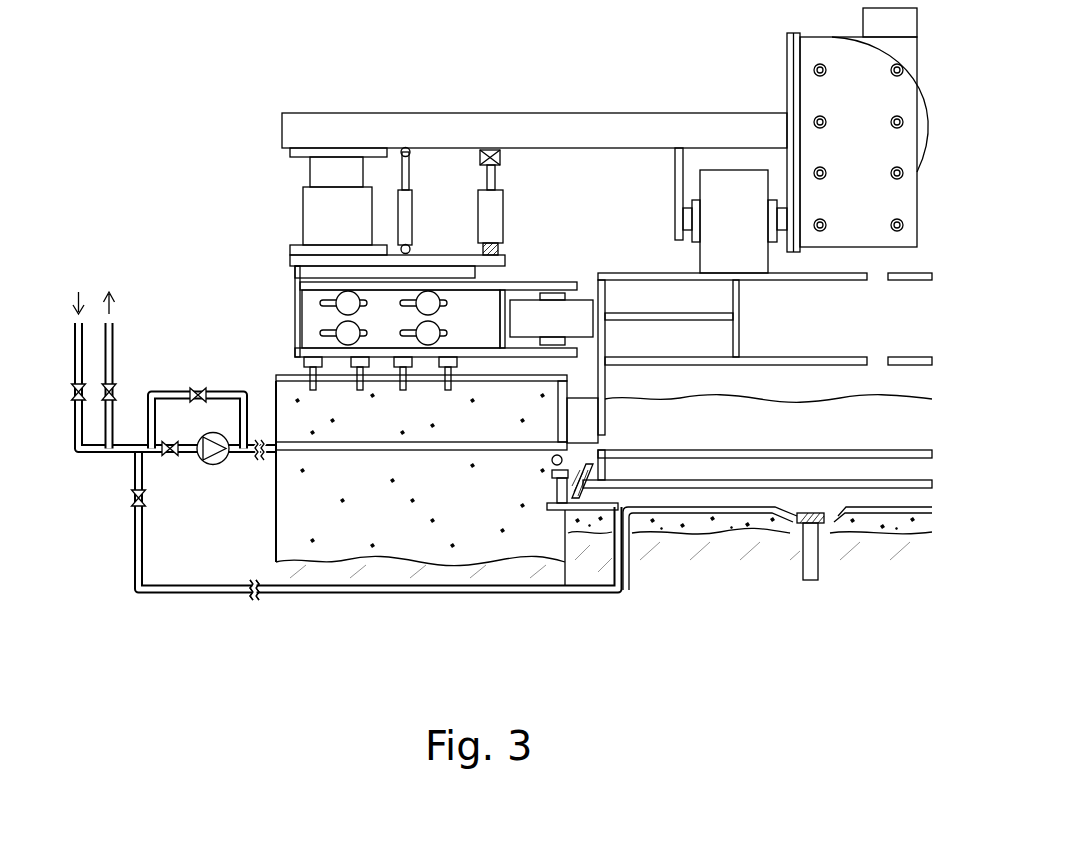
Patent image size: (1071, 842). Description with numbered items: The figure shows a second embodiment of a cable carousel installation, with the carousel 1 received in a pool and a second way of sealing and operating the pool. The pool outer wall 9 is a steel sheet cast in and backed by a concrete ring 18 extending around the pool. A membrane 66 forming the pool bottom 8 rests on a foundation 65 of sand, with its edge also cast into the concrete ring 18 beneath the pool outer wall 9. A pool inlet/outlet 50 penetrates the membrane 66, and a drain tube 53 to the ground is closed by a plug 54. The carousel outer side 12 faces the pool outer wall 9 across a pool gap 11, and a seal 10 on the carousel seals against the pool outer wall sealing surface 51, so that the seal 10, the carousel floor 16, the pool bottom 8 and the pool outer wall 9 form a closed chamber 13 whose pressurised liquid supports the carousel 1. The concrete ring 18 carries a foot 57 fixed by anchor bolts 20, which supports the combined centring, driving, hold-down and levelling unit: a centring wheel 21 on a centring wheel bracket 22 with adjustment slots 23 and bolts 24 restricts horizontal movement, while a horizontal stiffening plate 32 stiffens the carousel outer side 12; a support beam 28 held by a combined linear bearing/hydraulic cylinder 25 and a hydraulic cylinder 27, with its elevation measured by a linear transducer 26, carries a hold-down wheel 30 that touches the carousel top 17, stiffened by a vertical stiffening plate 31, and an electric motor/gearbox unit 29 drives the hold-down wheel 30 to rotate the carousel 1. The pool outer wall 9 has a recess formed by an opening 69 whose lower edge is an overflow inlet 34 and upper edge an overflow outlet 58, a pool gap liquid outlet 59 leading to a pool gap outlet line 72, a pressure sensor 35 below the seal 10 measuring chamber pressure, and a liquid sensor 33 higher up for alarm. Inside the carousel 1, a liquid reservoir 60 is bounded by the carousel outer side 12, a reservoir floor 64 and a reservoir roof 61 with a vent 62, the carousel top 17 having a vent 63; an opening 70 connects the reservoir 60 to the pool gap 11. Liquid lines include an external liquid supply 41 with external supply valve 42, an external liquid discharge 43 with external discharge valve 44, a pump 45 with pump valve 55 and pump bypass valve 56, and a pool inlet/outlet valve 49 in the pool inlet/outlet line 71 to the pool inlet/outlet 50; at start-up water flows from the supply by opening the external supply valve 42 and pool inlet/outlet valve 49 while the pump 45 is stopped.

The carousel 1 is at (628, 262).
The pool bottom 8 is at (910, 515).
The pool outer wall 9 is at (558, 430).
The seal 10 is at (586, 520).
The pool gap 11 is at (582, 390).
The carousel outer side 12 is at (605, 378).
The closed chamber 13 is at (728, 505).
The carousel floor 16 is at (675, 483).
The carousel top 17 is at (912, 282).
The concrete ring 18 is at (290, 522).
The anchor bolts 20 is at (306, 357).
The centring wheel 21 is at (575, 300).
The centring wheel bracket 22 is at (500, 290).
The adjustment slots 23 is at (405, 330).
The bolts 24 is at (437, 305).
The combined linear bearing/hydraulic cylinder 25 is at (315, 200).
The linear transducer 26 is at (406, 203).
The hydraulic cylinder 27 is at (497, 205).
The support beam 28 is at (455, 127).
The electric motor/gearbox unit 29 is at (810, 88).
The hold-down wheel 30 is at (712, 262).
The vertical stiffening plate 31 is at (733, 335).
The horizontal stiffening plate 32 is at (646, 321).
The liquid sensor 33 is at (565, 405).
The overflow inlet 34 is at (555, 485).
The pressure sensor 35 is at (558, 503).
The external liquid supply 41 is at (172, 358).
The external supply valve 42 is at (72, 393).
The external liquid discharge 43 is at (110, 358).
The external discharge valve 44 is at (114, 390).
The pump 45 is at (213, 465).
The pool inlet/outlet valve 49 is at (132, 498).
The pool inlet/outlet 50 is at (626, 515).
The pool outer wall sealing surface 51 is at (575, 476).
The drain tube 53 is at (812, 580).
The plug 54 is at (800, 522).
The pump valve 55 is at (170, 456).
The pump bypass valve 56 is at (198, 388).
The foot 57 is at (300, 285).
The overflow outlet 58 is at (552, 462).
The pool gap liquid outlet 59 is at (568, 448).
The liquid reservoir 60 is at (760, 434).
The reservoir roof 61 is at (782, 360).
The vent 62 is at (878, 360).
The vent 63 is at (878, 282).
The reservoir floor 64 is at (790, 452).
The foundation of sand 65 is at (930, 520).
The membrane 66 is at (880, 515).
The opening 69 is at (550, 472).
The opening 70 is at (605, 440).
The pool inlet/outlet line 71 is at (136, 553).
The pool gap outlet line 72 is at (410, 440).